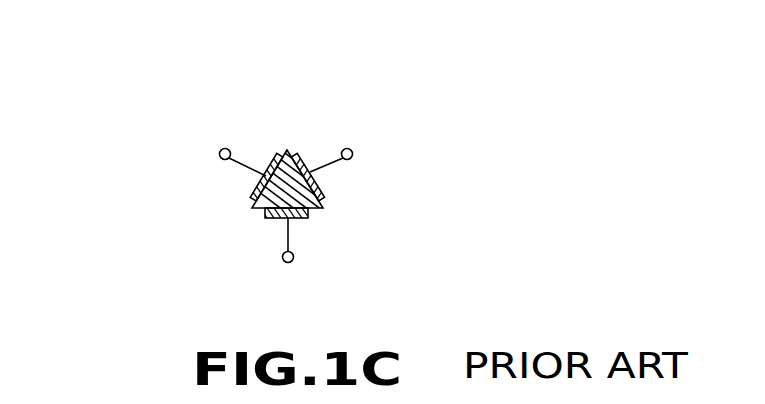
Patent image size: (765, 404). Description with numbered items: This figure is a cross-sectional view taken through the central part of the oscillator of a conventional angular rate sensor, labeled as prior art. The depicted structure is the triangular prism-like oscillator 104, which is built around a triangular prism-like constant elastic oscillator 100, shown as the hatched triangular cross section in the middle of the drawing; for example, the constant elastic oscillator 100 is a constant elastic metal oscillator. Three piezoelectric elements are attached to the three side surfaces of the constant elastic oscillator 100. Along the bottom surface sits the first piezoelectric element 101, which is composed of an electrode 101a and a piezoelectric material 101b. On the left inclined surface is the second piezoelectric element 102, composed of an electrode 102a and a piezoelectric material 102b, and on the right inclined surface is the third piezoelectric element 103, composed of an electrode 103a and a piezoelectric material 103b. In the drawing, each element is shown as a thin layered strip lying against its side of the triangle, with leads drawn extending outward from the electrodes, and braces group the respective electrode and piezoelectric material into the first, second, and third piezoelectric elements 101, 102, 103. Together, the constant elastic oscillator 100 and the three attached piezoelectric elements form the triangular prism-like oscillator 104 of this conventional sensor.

The constant elastic oscillator 100 is at (262, 208).
The first piezoelectric element 101 is at (400, 238).
The electrode 101a is at (298, 220).
The piezoelectric material 101b is at (296, 218).
The second piezoelectric element 102 is at (117, 153).
The electrode 102a is at (262, 175).
The piezoelectric material 102b is at (258, 193).
The third piezoelectric element 103 is at (458, 153).
The electrode 103a is at (318, 172).
The piezoelectric material 103b is at (318, 193).
The triangular prism-like oscillator 104 is at (352, 75).